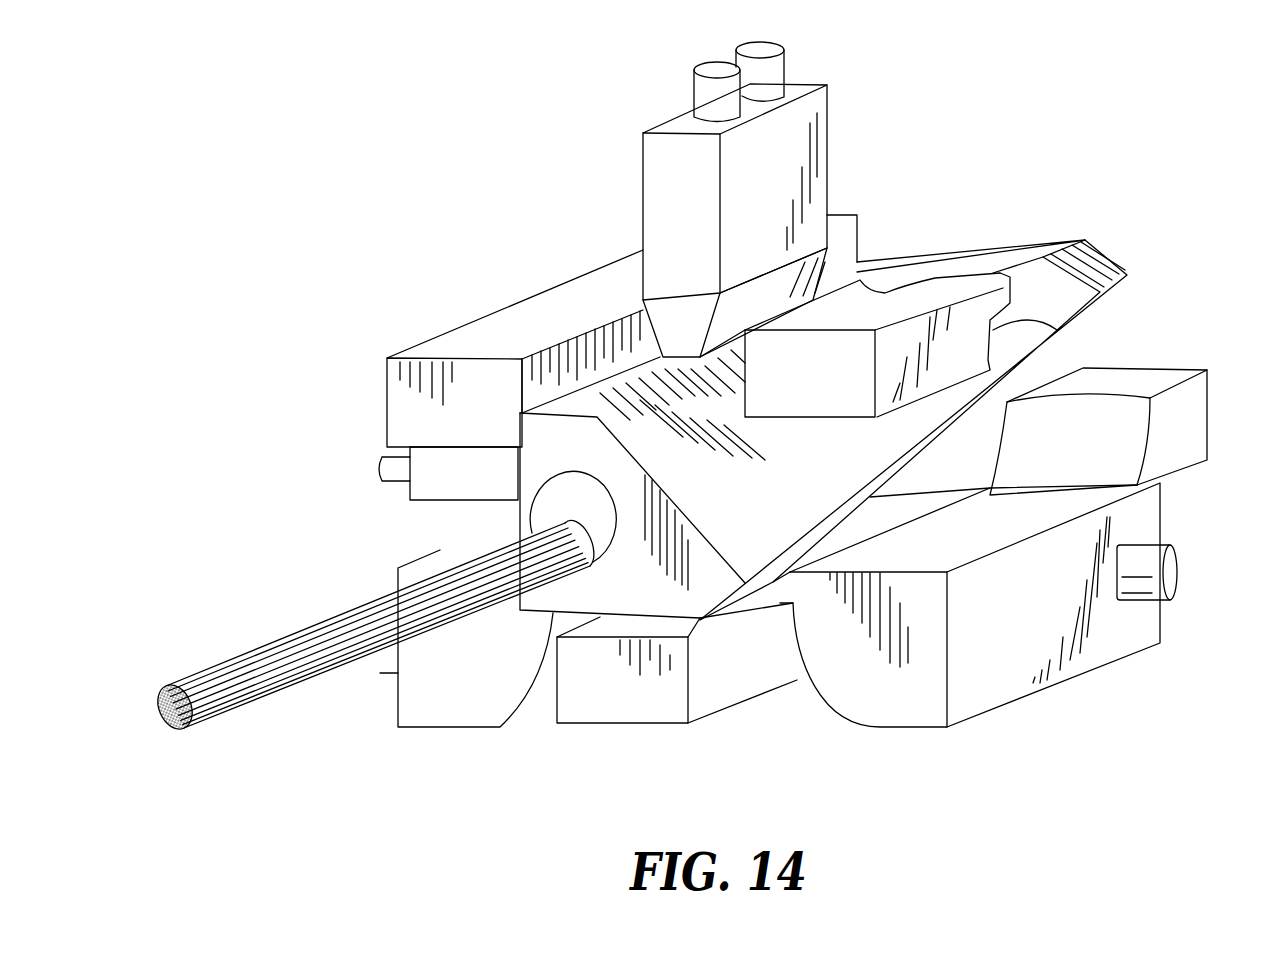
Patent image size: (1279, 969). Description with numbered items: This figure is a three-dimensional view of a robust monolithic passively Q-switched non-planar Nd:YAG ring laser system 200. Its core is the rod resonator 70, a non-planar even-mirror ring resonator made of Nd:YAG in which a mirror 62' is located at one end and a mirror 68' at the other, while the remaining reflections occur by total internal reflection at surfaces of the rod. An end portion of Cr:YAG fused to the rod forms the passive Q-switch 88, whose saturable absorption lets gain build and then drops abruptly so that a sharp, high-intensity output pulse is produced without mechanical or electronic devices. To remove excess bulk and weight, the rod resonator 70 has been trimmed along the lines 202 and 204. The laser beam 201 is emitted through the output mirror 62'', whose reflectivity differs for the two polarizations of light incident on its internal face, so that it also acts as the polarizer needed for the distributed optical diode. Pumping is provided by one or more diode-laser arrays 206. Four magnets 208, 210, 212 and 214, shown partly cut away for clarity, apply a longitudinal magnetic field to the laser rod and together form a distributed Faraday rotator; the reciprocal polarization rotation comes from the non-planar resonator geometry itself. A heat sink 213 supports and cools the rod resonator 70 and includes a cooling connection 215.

The non-planar Q-switched ring laser system 200 is at (395, 53).
The laser beam 201 is at (240, 693).
The trim line 202 is at (712, 368).
The trim line 204 is at (905, 455).
The diode-laser array 206 is at (822, 140).
The magnet 208 is at (452, 330).
The magnet 210 is at (605, 723).
The magnet 212 is at (1173, 362).
The heat sink 213 is at (868, 697).
The magnet 214 is at (1057, 330).
The cooling connection 215 is at (1177, 552).
The mirror 62' is at (732, 693).
The output mirror 62'' is at (472, 516).
The mirror 68' is at (971, 223).
The rod resonator 70 is at (971, 397).
The passive Q-switch 88 is at (1057, 240).